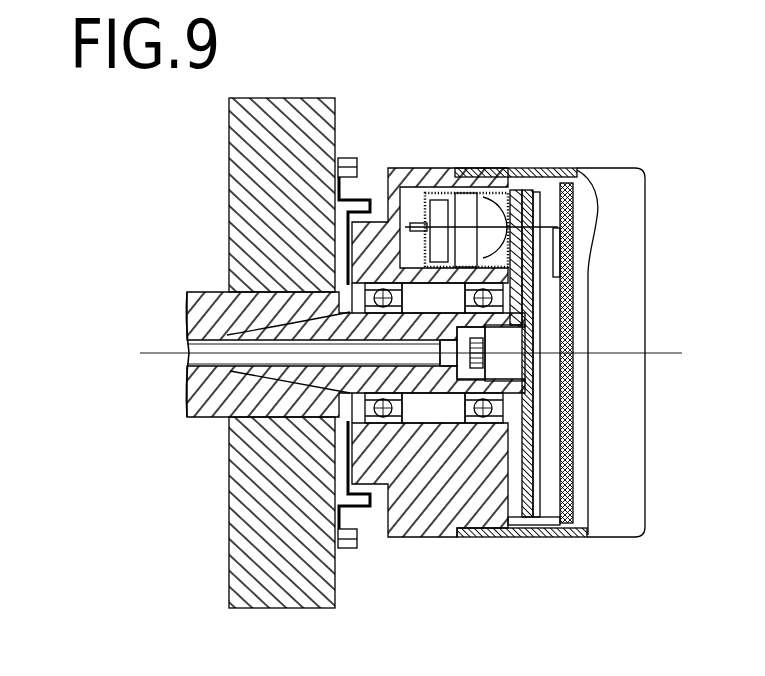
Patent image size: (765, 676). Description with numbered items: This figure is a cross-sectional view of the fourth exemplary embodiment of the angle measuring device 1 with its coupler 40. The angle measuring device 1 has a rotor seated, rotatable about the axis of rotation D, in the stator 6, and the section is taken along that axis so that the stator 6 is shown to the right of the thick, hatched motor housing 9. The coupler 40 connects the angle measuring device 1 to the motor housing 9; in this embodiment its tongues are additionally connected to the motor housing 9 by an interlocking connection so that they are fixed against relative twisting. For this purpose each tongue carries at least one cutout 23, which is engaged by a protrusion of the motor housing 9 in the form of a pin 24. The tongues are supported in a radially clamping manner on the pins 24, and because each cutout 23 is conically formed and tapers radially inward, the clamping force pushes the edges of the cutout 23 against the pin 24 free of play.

The angle measuring device 1 is at (613, 510).
The stator 6 is at (483, 517).
The motor housing 9 is at (248, 548).
The cutout 23 is at (352, 186).
The pin 24 is at (350, 172).
The coupler 40 is at (350, 252).
The axis of rotation D is at (172, 353).